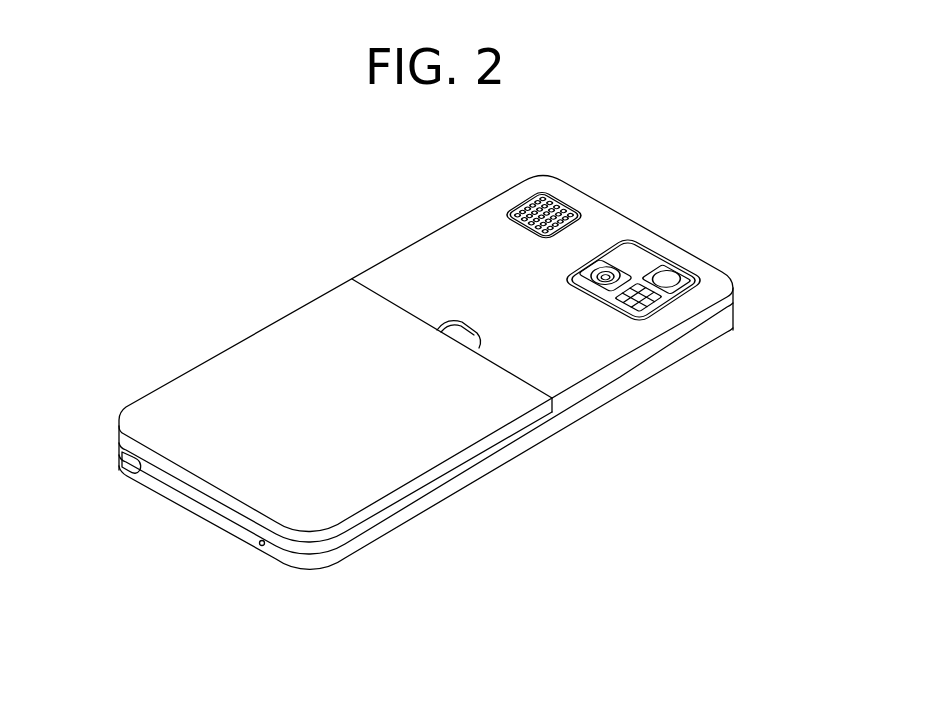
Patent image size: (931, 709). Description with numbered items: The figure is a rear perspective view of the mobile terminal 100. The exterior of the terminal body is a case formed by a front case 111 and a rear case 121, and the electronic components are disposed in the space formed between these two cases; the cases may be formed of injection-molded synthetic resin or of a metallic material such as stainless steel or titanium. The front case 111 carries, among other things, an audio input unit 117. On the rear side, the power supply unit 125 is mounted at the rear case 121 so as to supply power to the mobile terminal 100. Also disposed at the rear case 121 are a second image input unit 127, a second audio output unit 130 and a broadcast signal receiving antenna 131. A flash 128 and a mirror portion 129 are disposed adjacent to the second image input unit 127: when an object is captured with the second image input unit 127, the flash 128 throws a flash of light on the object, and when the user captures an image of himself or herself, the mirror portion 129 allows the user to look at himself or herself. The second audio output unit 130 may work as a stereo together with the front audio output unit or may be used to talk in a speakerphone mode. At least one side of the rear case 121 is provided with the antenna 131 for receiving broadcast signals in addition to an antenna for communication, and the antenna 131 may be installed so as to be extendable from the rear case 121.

The mobile terminal 100 is at (330, 236).
The front case 111 is at (737, 328).
The audio input unit 117 is at (258, 547).
The rear case 121 is at (737, 301).
The power supply unit 125 is at (286, 332).
The second image input unit 127 is at (604, 279).
The flash 128 is at (638, 289).
The mirror portion 129 is at (669, 278).
The second audio output unit 130 is at (528, 204).
The broadcast signal receiving antenna 131 is at (130, 463).